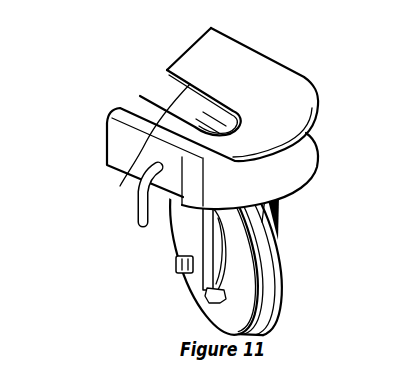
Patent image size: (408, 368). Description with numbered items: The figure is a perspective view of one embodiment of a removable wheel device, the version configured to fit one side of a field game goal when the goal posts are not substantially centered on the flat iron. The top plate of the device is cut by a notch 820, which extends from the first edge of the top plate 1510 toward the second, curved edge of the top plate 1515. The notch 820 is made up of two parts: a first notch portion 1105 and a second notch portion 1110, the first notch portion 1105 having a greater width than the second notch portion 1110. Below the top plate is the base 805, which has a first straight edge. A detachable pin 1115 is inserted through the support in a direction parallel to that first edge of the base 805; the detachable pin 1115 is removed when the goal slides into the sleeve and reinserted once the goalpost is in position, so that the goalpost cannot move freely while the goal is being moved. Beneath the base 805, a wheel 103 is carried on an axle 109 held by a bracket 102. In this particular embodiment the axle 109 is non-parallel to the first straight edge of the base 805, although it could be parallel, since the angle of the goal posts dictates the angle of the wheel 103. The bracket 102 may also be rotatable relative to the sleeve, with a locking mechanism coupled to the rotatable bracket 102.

The second notch portion 1110 is at (180, 67).
The first edge of the top plate 1510 is at (182, 64).
The notch 820 is at (144, 85).
The base 805 is at (178, 122).
The second, curved edge of the top plate 1515 is at (316, 121).
The first notch portion 1105 is at (120, 186).
The detachable pin 1115 is at (137, 207).
The bracket 102 is at (188, 224).
The wheel 103 is at (283, 264).
The axle 109 is at (177, 266).